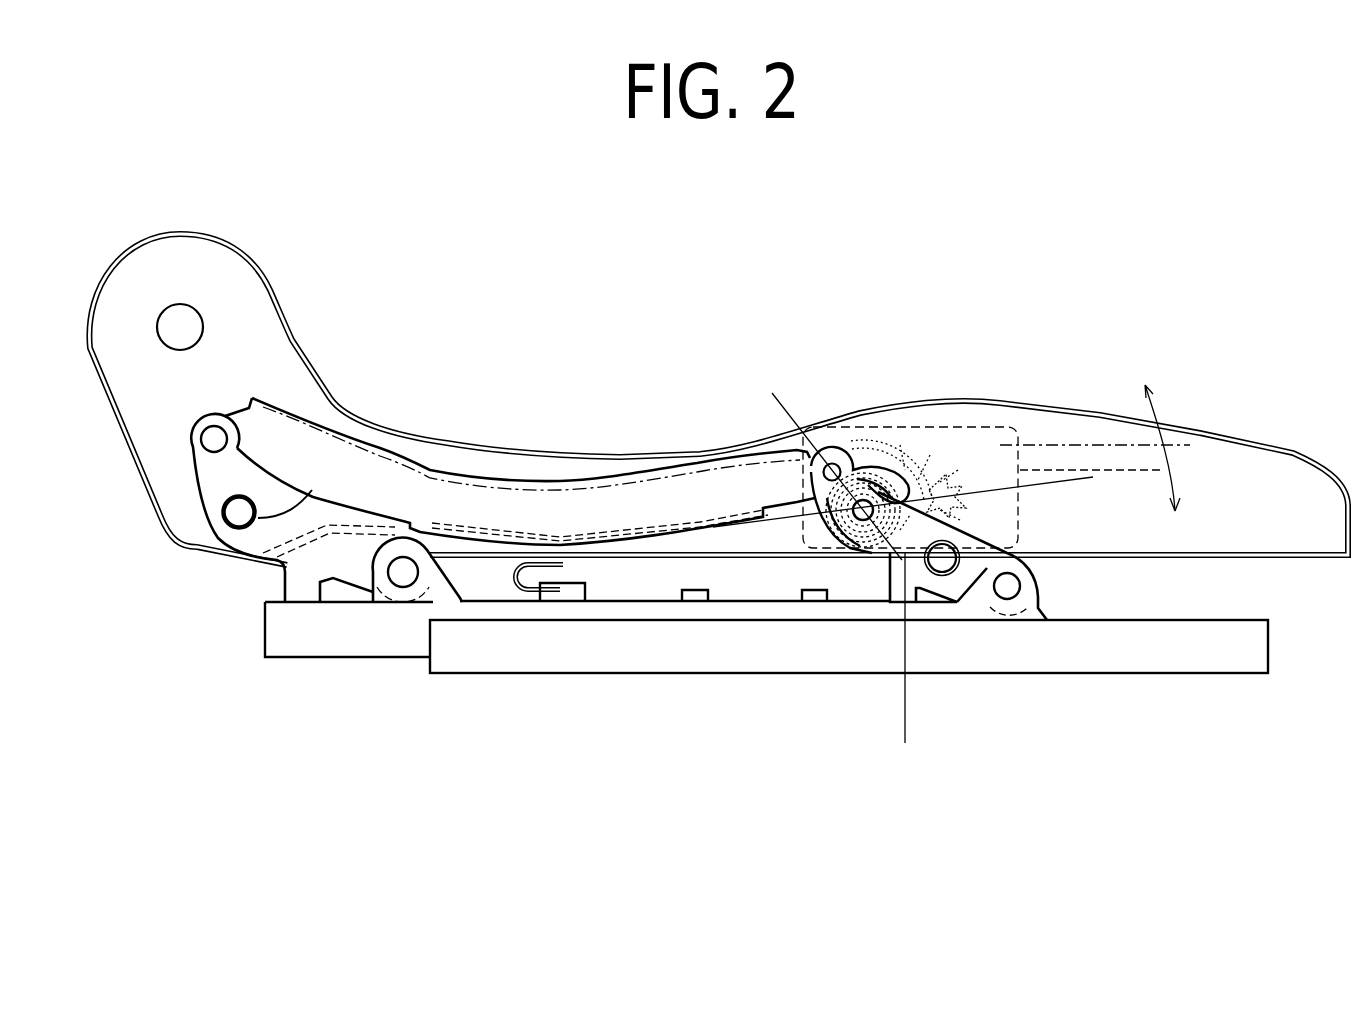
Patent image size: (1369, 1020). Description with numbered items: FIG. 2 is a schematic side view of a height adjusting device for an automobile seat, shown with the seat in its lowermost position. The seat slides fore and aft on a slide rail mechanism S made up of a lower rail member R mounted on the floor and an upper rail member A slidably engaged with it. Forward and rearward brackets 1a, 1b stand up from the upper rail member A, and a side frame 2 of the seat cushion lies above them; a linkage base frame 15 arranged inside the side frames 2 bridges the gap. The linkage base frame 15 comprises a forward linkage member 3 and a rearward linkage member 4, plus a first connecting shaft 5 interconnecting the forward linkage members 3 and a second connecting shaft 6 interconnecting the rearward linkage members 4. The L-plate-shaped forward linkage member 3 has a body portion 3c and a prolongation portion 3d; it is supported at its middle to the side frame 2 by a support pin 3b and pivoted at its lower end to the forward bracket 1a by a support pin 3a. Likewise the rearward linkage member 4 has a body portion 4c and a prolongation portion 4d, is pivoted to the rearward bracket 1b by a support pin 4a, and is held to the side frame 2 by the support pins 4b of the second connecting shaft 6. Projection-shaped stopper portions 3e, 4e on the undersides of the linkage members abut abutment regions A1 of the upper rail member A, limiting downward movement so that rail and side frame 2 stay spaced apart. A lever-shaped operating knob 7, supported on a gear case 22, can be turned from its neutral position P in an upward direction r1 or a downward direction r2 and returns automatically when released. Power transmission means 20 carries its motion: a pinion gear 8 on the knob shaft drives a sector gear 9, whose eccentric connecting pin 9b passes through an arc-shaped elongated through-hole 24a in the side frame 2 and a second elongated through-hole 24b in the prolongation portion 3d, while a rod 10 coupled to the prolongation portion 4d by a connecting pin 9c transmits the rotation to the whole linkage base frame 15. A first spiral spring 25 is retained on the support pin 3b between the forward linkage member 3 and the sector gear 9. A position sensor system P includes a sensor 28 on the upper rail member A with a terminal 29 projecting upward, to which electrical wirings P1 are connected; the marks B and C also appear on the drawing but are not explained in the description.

The forward brackets 1a is at (1068, 554).
The rearward brackets 1b is at (485, 580).
The side frame 2 is at (1293, 452).
The forward linkage member 3 is at (958, 602).
The support pin 3a is at (1007, 600).
The first and second support pins 3b is at (888, 588).
The body portion 3c is at (1062, 554).
The prolongation portion 3d is at (905, 478).
The stopper portion 3e is at (923, 590).
The rearward linkage member 4 is at (350, 583).
The support pin 4a is at (430, 558).
The support pins 4b is at (266, 517).
The body portion 4c is at (412, 545).
The prolongation portion 4d is at (239, 497).
The stopper portion 4e is at (278, 582).
The first connecting shaft 5 is at (953, 578).
The second connecting shaft 6 is at (372, 525).
The operating knob 7 is at (1127, 467).
The pinion gear 8 is at (947, 468).
The sector gear 9 is at (930, 463).
The connecting pin 9b is at (815, 476).
The connecting pin 9c is at (213, 426).
The rod 10 is at (577, 480).
The linkage base frame 15 is at (193, 520).
The power transmission means 20 is at (848, 422).
The gear case 22 is at (1010, 425).
The elongated through-hole 24a is at (913, 473).
The elongated through-hole 24b is at (863, 442).
The first spiral spring 25 is at (803, 592).
The sensors 28 is at (710, 594).
The terminals 29 is at (557, 602).
The upper rail member A is at (400, 658).
The abutment regions A1 is at (310, 580).
The link axis direction B is at (737, 516).
The pivot axis line C is at (803, 367).
The position sensor system P is at (612, 561).
The electrical wirings P1 is at (521, 590).
The lower rail member R is at (612, 675).
The slide rail mechanism S is at (265, 635).
The upward direction r1 is at (1172, 438).
The downward direction r2 is at (1197, 492).